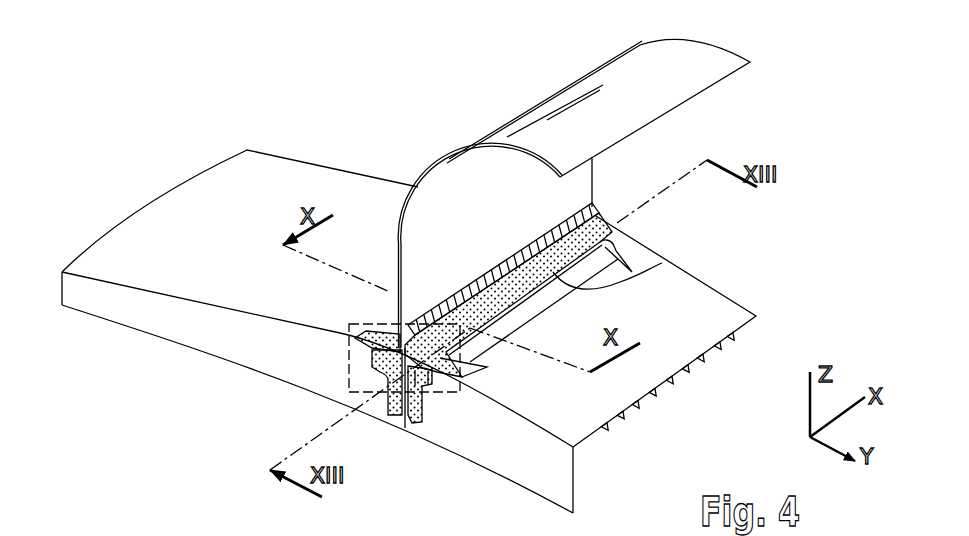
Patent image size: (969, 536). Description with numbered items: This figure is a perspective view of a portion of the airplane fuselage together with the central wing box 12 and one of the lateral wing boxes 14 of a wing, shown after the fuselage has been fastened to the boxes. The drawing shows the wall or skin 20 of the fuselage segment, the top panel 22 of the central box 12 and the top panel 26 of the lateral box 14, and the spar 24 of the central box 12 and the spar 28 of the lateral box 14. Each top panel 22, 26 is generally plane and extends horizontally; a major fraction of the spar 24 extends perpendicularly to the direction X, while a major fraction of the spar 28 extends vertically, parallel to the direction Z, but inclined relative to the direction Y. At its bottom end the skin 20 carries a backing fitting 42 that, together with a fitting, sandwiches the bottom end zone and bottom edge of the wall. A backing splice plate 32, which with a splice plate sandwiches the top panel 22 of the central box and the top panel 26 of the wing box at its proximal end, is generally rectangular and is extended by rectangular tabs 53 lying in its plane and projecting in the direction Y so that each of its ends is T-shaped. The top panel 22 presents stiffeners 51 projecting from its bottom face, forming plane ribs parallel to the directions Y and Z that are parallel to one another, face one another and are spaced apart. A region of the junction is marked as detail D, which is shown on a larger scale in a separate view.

The central wing box 12 is at (745, 340).
The lateral wing box 14 is at (253, 346).
The skin 20 is at (690, 62).
The top panel 22 is at (715, 315).
The spar 24 is at (543, 463).
The top panel 26 is at (278, 180).
The spar 28 is at (157, 316).
The backing splice plate 32 is at (628, 264).
The backing fitting 42 is at (600, 210).
The stiffeners 51 is at (627, 413).
The tabs 53 is at (616, 240).
The detail D is at (320, 390).